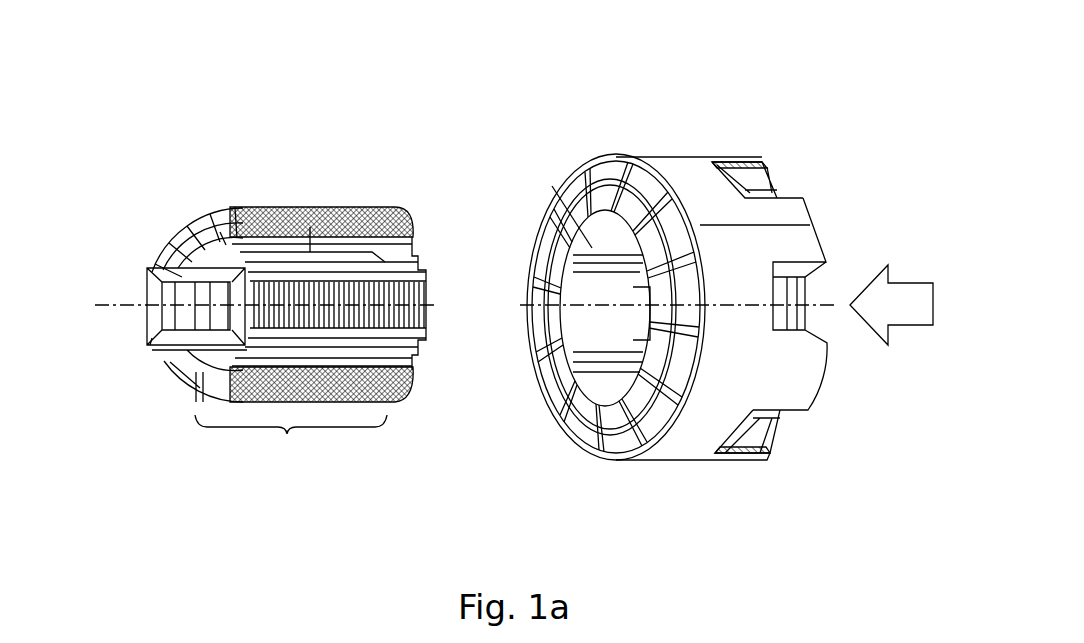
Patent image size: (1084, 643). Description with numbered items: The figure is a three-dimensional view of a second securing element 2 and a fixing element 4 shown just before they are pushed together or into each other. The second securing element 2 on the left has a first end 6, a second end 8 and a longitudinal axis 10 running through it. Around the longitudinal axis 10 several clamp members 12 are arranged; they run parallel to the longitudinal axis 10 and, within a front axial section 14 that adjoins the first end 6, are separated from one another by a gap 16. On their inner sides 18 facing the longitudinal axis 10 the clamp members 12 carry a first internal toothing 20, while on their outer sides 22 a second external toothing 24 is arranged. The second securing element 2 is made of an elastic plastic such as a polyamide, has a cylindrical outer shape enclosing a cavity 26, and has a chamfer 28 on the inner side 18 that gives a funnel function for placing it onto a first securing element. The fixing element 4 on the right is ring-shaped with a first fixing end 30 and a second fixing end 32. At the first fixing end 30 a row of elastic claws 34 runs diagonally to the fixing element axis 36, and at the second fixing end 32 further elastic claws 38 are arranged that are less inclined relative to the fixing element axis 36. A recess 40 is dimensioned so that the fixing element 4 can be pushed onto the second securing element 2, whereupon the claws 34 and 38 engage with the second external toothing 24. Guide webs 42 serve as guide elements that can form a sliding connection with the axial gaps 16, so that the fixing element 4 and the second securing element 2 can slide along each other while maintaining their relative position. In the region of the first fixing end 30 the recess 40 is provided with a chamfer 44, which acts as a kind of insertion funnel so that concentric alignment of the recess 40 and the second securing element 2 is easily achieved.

The second securing element 2 is at (343, 126).
The fixing element 4 is at (699, 324).
The first end 6 is at (295, 317).
The second end 8 is at (412, 232).
The longitudinal axis 10 is at (127, 300).
The clamp members 12 is at (182, 405).
The front axial section 14 is at (291, 438).
The gap 16 is at (327, 206).
The inner sides 18 is at (222, 238).
The first internal toothing 20 is at (268, 205).
The outer sides 22 is at (423, 318).
The second external toothing 24 is at (420, 262).
The cavity 26 is at (155, 360).
The chamfer 28 is at (193, 287).
The first fixing end 30 is at (589, 465).
The second fixing end 32 is at (831, 393).
The elastic claws 34 is at (630, 157).
The fixing element axis 36 is at (833, 304).
The elastic claws 38 is at (768, 170).
The recess 40 is at (594, 337).
The guide webs 42 is at (552, 185).
The chamfer 44 is at (558, 420).